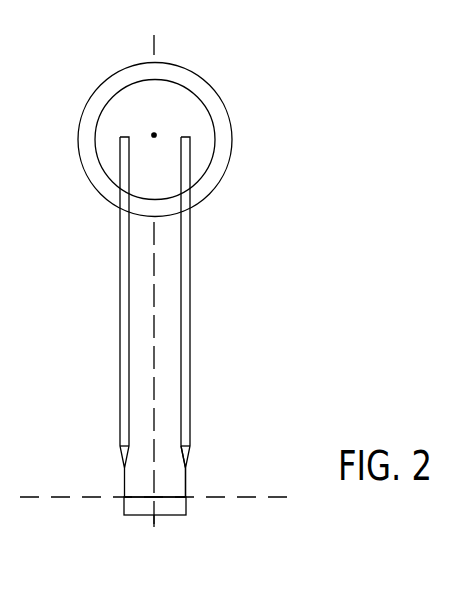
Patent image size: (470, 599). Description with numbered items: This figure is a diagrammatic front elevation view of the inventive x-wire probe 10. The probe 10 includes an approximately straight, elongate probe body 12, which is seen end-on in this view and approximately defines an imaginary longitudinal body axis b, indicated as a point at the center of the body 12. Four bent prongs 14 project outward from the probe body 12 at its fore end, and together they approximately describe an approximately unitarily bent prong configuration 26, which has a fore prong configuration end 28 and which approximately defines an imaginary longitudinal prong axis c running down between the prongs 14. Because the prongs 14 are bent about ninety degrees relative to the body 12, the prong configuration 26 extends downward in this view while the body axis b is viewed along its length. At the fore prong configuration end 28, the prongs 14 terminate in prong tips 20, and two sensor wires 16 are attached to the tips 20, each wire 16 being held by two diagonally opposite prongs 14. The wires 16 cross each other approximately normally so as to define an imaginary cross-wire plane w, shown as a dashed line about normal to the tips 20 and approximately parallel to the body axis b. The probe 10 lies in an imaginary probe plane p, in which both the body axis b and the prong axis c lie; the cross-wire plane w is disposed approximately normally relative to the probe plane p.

The x-wire probe 10 is at (69, 110).
The probe body 12 is at (106, 82).
The prongs 14 is at (115, 275).
The prong configuration 26 is at (115, 237).
The prong tips 20 is at (187, 495).
The sensor wires 16 is at (145, 522).
The fore prong configuration end 28 is at (123, 498).
The body axis b is at (158, 130).
The prong axis c is at (155, 253).
The probe plane p is at (162, 530).
The cross-wire plane w is at (155, 508).